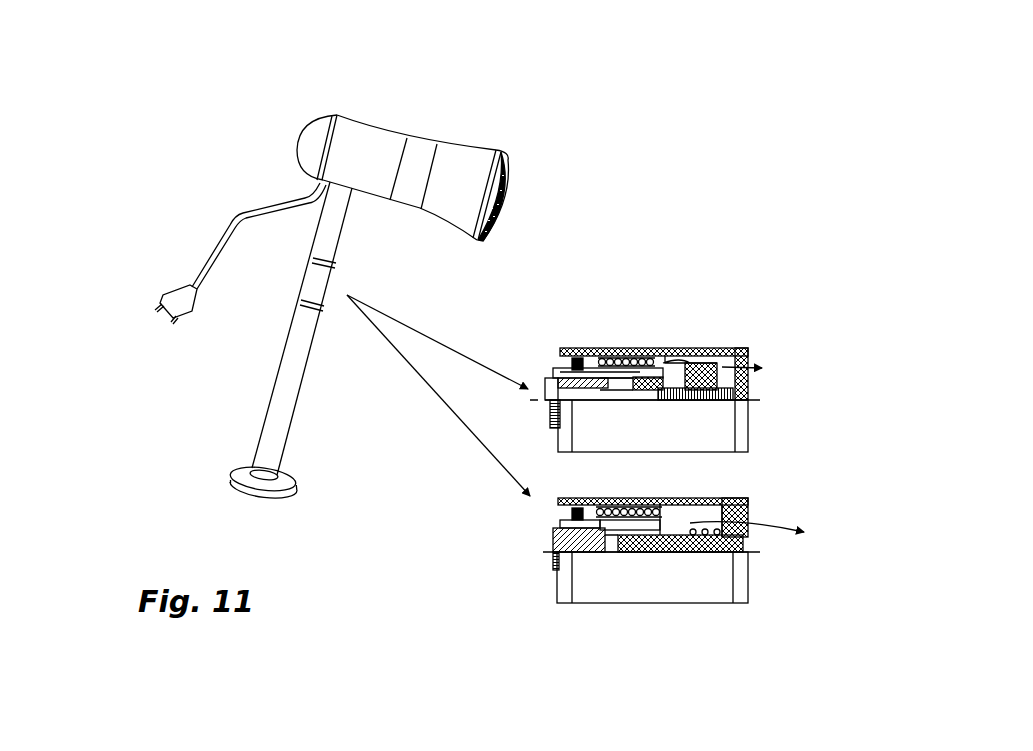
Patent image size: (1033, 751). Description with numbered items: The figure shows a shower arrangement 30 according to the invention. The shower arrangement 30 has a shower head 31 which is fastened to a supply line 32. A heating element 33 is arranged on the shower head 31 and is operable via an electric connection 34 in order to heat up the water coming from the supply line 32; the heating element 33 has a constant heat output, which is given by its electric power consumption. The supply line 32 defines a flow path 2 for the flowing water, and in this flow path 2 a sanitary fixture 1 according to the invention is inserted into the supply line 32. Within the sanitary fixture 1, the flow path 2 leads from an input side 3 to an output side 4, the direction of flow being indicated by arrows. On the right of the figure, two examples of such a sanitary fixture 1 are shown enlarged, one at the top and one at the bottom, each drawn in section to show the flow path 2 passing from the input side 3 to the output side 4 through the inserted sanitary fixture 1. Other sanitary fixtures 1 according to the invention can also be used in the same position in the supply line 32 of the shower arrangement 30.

The sanitary fixture 1 is at (312, 282).
The flow path 2 is at (554, 192).
The input side 3 is at (286, 305).
The output side 4 is at (309, 257).
The shower arrangement 30 is at (208, 96).
The shower head 31 is at (383, 157).
The supply line 32 is at (282, 387).
The heating element 33 is at (327, 116).
The electric connection 34 is at (207, 252).